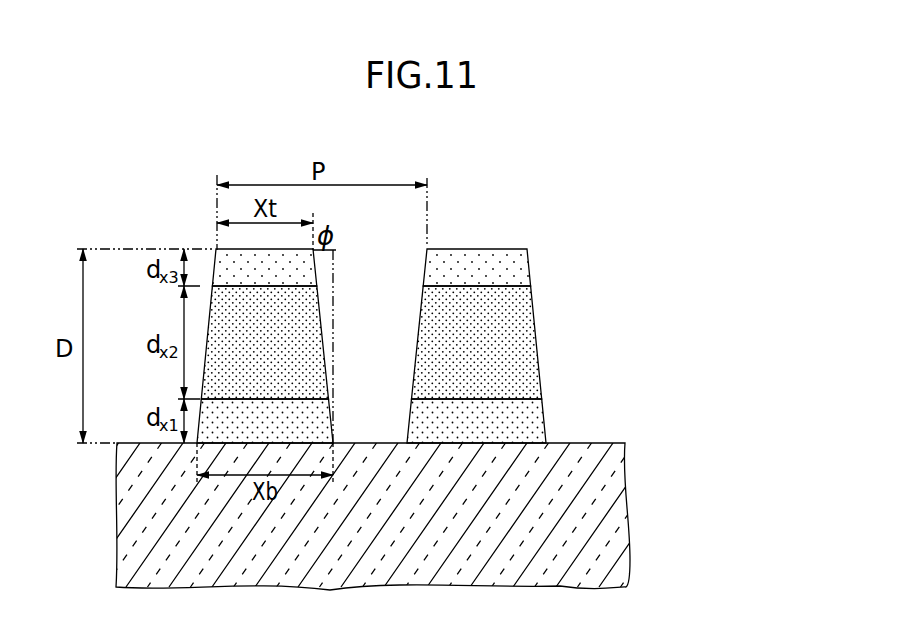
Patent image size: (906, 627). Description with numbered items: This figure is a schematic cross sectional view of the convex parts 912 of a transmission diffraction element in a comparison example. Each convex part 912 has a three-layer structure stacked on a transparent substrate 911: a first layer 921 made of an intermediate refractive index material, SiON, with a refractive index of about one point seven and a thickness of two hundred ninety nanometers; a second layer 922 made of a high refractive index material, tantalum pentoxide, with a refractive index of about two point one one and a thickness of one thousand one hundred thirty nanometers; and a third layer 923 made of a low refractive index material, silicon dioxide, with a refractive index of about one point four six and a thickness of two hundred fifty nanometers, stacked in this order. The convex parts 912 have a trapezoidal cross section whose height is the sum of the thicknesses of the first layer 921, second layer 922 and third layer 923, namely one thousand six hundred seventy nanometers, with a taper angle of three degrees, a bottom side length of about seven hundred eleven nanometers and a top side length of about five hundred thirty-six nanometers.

The transparent substrate 911 is at (615, 504).
The convex part 912 is at (436, 345).
The first layer 921 is at (518, 424).
The second layer 922 is at (520, 344).
The third layer 923 is at (412, 266).